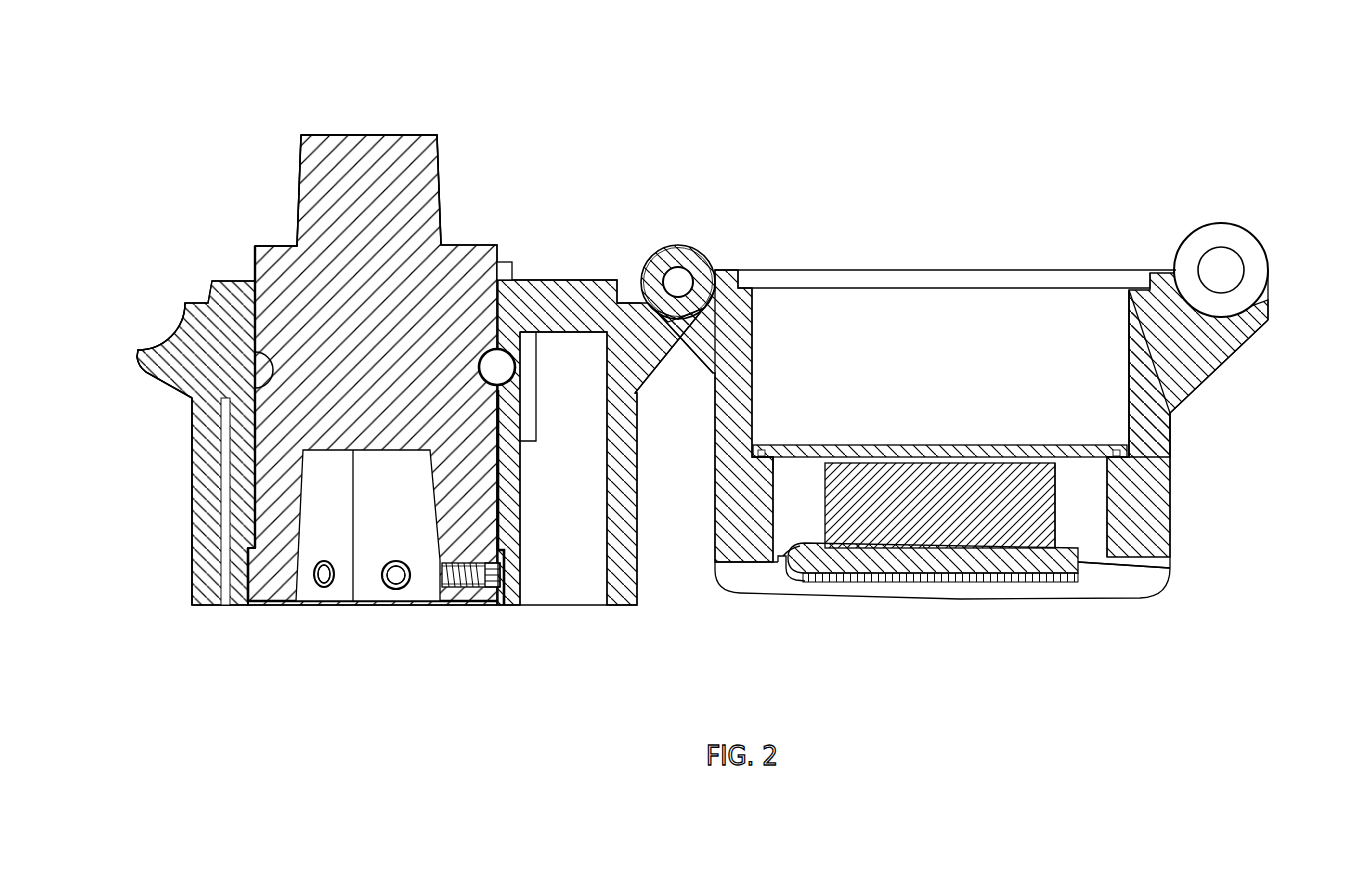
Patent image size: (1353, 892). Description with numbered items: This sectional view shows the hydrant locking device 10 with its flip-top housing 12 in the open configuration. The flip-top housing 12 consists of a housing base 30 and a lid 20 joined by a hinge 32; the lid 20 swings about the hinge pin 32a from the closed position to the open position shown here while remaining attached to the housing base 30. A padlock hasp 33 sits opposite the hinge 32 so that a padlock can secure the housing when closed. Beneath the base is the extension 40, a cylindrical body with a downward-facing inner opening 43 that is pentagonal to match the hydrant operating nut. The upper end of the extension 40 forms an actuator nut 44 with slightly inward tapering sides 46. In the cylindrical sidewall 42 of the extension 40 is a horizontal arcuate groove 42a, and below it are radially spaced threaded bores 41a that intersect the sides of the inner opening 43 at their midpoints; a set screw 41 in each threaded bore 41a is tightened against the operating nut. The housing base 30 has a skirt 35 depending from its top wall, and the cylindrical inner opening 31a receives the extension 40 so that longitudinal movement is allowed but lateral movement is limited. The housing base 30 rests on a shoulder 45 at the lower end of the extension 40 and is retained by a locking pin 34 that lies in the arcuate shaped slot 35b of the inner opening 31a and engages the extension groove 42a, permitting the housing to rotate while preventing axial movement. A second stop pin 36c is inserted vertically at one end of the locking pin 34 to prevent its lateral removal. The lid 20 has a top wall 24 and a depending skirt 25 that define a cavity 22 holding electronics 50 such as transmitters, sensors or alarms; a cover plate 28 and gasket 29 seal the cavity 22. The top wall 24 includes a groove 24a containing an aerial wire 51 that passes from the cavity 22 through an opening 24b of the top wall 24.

The hydrant locking device 10 is at (945, 139).
The flip-top housing 12 is at (972, 302).
The lid 20 is at (991, 464).
The cavity 22 is at (953, 447).
The top wall 24 is at (934, 602).
The groove 24a is at (1130, 580).
The opening 24b is at (785, 570).
The skirt 25 is at (1162, 457).
The cover plate 28 is at (940, 411).
The gasket 29 is at (762, 452).
The housing base 30 is at (178, 431).
The inner opening 31a is at (478, 512).
The hinge 32 is at (684, 270).
The hinge pin 32a is at (682, 275).
The padlock hasp 33 is at (702, 313).
The locking pin 34 is at (615, 376).
The skirt 35 is at (205, 520).
The arcuate shaped slot 35b is at (495, 398).
The second stop pin 36c is at (503, 268).
The extension 40 is at (381, 390).
The set screw 41 is at (325, 590).
The threaded bore 41a is at (327, 560).
The cylindrical sidewall 42 is at (255, 258).
The groove 42a is at (209, 323).
The inner opening 43 is at (368, 572).
The actuator nut 44 is at (418, 184).
The shoulder 45 is at (505, 562).
The tapering sides 46 is at (297, 190).
The electronics 50 is at (1126, 512).
The aerial wire 51 is at (933, 600).